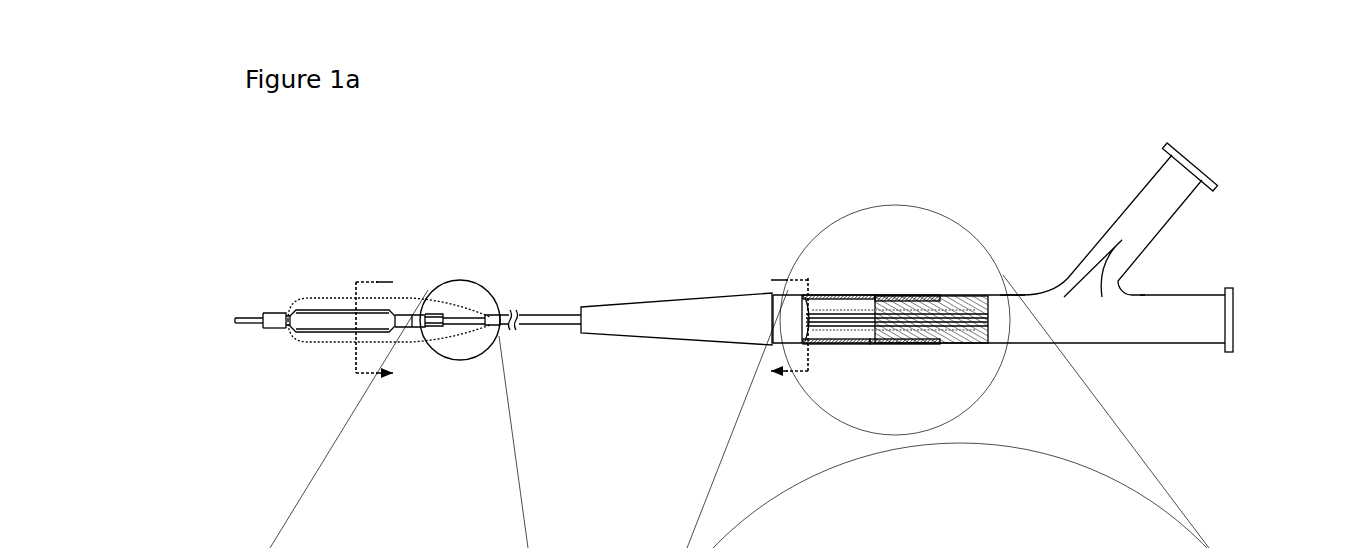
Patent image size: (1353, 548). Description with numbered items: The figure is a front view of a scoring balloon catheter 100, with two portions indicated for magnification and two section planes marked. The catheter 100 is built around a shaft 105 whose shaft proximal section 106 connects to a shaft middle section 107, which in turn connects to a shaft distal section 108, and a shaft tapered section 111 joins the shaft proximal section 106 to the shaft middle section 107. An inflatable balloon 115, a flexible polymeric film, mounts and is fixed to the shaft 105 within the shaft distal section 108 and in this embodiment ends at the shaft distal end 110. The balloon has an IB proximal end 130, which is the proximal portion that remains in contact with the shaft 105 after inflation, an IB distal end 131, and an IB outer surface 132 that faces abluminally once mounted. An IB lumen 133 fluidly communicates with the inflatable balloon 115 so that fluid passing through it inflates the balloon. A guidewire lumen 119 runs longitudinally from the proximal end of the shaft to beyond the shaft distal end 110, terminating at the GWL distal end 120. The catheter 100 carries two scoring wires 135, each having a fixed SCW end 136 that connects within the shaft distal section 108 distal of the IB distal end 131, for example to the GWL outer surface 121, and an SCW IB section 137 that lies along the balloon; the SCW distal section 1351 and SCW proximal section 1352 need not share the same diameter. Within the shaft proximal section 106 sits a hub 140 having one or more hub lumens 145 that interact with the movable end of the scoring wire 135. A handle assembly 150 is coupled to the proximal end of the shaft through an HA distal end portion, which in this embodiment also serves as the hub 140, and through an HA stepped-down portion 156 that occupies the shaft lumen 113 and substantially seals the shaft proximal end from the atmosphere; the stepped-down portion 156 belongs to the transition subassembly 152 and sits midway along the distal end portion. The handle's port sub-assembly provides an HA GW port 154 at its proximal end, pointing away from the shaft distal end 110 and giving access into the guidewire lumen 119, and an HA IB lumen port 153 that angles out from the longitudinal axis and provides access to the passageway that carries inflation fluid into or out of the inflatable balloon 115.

The scoring balloon catheter 100 is at (1036, 80).
The shaft 105 is at (673, 249).
The shaft proximal section 106 is at (1149, 283).
The shaft middle section 107 is at (557, 286).
The shaft distal section 108 is at (302, 268).
The shaft distal end 110 is at (273, 309).
The shaft tapered section 111 is at (623, 337).
The shaft lumen 113 is at (864, 298).
The inflatable balloon 115 is at (367, 324).
The guidewire lumen 119 is at (822, 303).
The GWL distal end 120 is at (233, 309).
The GWL outer surface 121 is at (240, 327).
The IB proximal end 130 is at (414, 327).
The IB distal end 131 is at (281, 324).
The IB outer surface 132 is at (328, 334).
The IB lumen 133 is at (838, 345).
The scoring wire 135 is at (840, 317).
The fixed SCW end 136 is at (269, 330).
The SCW IB section 137 is at (370, 292).
The hub 140 is at (982, 340).
The hub lumen 145 is at (955, 338).
The handle assembly 150 is at (1047, 378).
The transition subassembly 152 is at (937, 389).
The HA IB lumen port 153 is at (1211, 162).
The HA GW port 154 is at (1237, 322).
The HA stepped-down portion 156 is at (940, 294).
The SCW distal section 1351 is at (324, 295).
The SCW proximal section 1352 is at (877, 298).